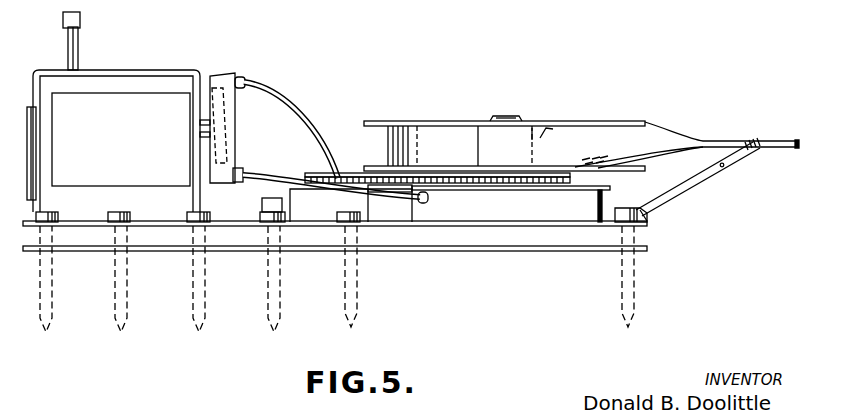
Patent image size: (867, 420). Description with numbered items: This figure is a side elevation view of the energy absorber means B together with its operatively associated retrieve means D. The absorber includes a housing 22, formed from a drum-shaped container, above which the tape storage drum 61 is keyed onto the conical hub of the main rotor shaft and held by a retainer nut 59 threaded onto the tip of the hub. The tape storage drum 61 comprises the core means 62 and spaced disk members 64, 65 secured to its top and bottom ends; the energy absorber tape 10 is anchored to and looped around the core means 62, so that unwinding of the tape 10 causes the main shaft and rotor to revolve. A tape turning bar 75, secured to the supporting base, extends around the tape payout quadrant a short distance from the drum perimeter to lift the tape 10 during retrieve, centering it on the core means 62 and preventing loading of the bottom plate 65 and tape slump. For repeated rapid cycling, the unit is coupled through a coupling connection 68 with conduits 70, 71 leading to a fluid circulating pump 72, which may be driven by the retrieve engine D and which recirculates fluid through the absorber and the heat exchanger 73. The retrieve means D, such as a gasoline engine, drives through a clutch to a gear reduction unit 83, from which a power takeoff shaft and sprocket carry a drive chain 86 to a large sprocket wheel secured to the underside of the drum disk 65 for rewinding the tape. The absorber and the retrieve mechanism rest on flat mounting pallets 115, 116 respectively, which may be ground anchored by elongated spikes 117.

The energy absorber tape 10 is at (633, 142).
The housing 22 is at (590, 207).
The retainer nut 59 is at (490, 118).
The tape storage drum 61 is at (540, 124).
The core means 62 is at (550, 131).
The disk member 64 is at (378, 120).
The disk member 65 is at (368, 166).
The coupling connection 68 is at (428, 198).
The conduit 70 is at (263, 173).
The conduit 71 is at (278, 92).
The fluid circulating pump 72 is at (216, 90).
The heat exchanger 73 is at (228, 118).
The tape turning bar 75 is at (722, 168).
The gear reduction unit 83 is at (305, 212).
The drive chain 86 is at (556, 185).
The mounting pallet 115 is at (164, 222).
The mounting pallet 116 is at (492, 222).
The elongated spikes 117 is at (192, 298).
The energy absorber means B is at (421, 105).
The retrieve means D is at (121, 76).